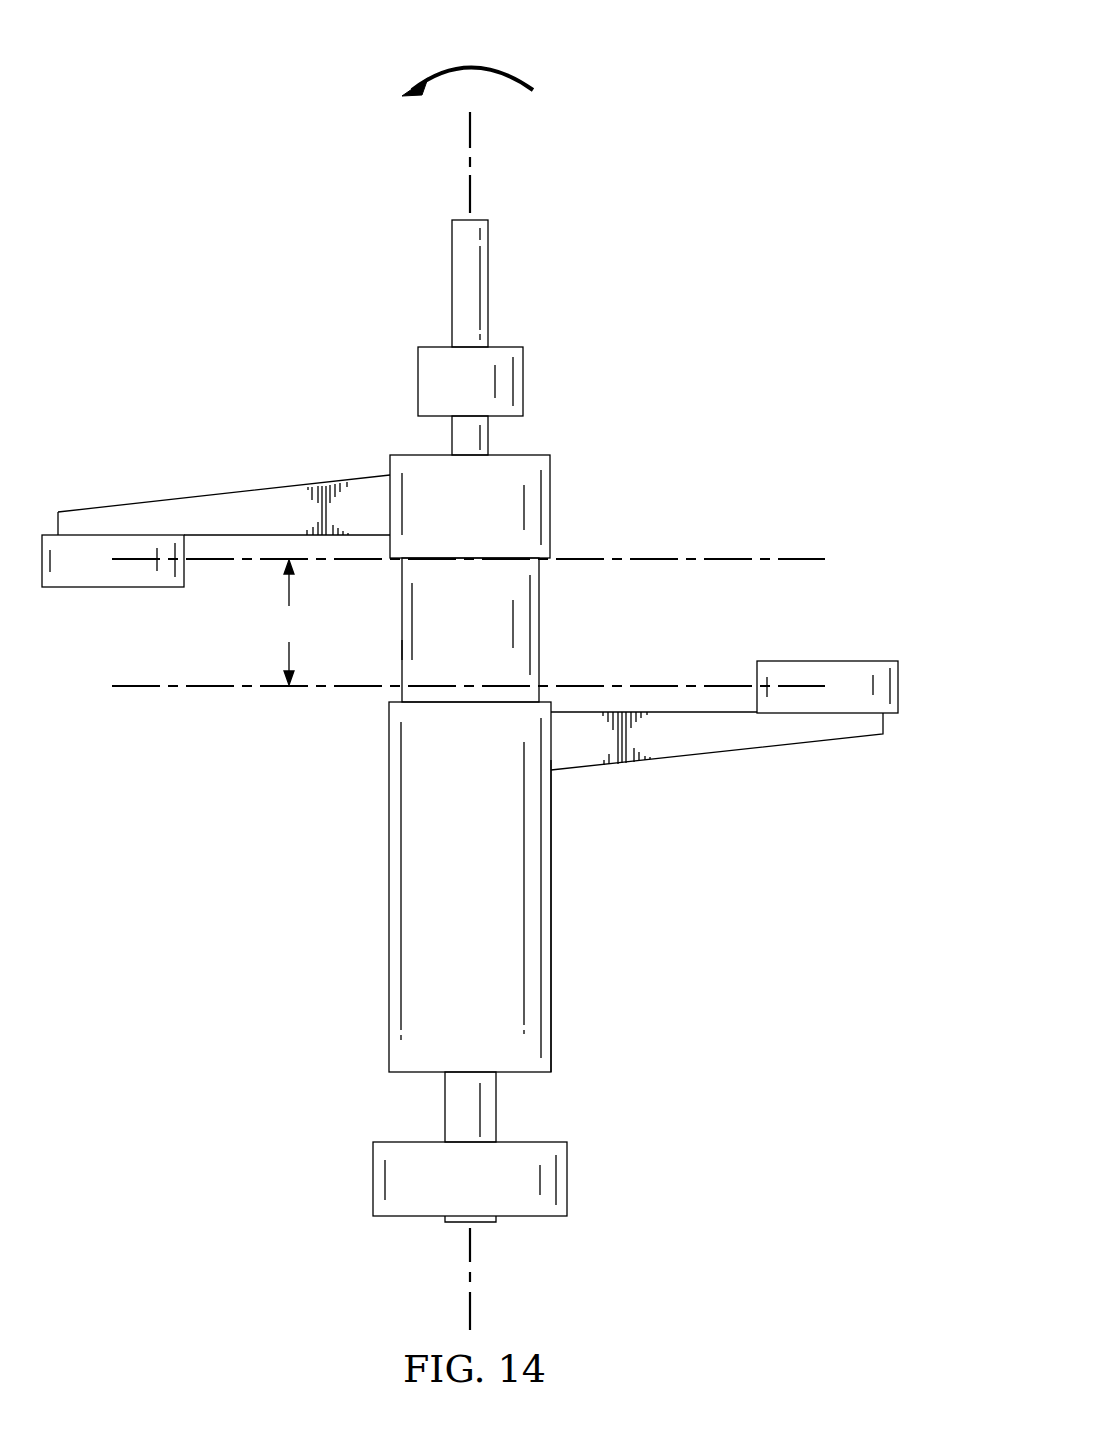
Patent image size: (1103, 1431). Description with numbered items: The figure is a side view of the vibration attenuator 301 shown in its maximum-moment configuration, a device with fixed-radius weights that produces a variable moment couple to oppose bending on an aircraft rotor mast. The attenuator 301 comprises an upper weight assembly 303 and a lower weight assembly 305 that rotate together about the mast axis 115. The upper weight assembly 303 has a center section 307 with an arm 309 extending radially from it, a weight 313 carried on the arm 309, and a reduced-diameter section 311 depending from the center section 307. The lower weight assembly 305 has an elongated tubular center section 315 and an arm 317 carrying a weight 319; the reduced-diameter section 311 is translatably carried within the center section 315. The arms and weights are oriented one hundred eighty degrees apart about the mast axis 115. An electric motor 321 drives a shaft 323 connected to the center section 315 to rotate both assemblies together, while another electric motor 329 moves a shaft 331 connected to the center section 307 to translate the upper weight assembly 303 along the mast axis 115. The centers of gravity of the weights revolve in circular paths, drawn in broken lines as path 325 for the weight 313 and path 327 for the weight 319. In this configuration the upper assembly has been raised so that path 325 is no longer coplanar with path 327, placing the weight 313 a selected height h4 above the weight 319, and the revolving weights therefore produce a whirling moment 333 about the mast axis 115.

The mast axis 115 is at (468, 132).
The whirling moment 333 is at (483, 64).
The attenuator 301 is at (724, 231).
The shaft 331 is at (489, 299).
The electric motor 329 is at (523, 378).
The center section 307 is at (551, 473).
The upper weight assembly 303 is at (540, 612).
The reduced-diameter section 311 is at (402, 636).
The lower weight assembly 305 is at (389, 885).
The center section 315 is at (551, 998).
The arm 309 is at (256, 491).
The weight 313 is at (80, 592).
The arm 317 is at (710, 755).
The weight 319 is at (862, 658).
The path 325 is at (722, 558).
The path 327 is at (215, 686).
The selected height h4 is at (291, 622).
The shaft 323 is at (445, 1102).
The electric motor 321 is at (567, 1180).